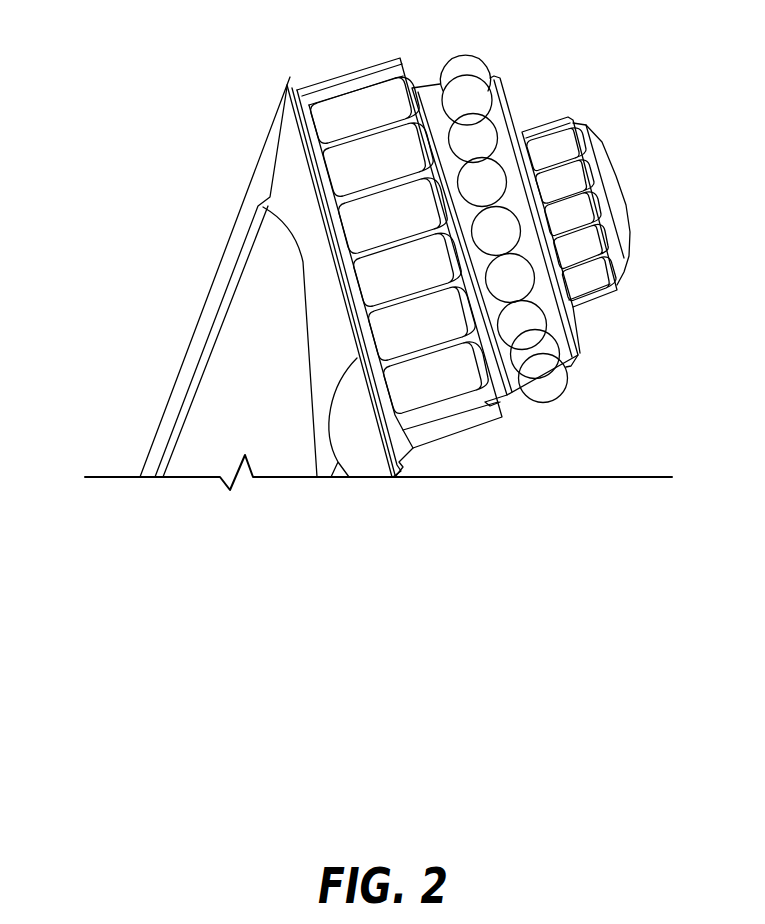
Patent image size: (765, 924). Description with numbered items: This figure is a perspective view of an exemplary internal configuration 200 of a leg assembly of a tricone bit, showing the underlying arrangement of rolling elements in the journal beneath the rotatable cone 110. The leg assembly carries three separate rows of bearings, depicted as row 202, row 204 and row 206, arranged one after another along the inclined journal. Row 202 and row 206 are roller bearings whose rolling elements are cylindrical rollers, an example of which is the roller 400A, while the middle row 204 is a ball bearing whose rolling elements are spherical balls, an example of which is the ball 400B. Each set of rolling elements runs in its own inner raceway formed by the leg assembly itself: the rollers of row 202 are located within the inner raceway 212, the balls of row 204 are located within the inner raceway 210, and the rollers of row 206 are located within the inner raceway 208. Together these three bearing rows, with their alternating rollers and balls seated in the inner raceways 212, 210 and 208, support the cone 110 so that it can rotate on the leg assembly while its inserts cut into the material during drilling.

The internal configuration 200 is at (136, 70).
The cone 110 is at (290, 168).
The row 202 is at (335, 125).
The roller 400A is at (399, 248).
The row 204 is at (457, 105).
The ball 400B is at (488, 76).
The row 206 is at (560, 156).
The inner raceway 208 is at (623, 276).
The inner raceway 210 is at (573, 360).
The inner raceway 212 is at (508, 398).